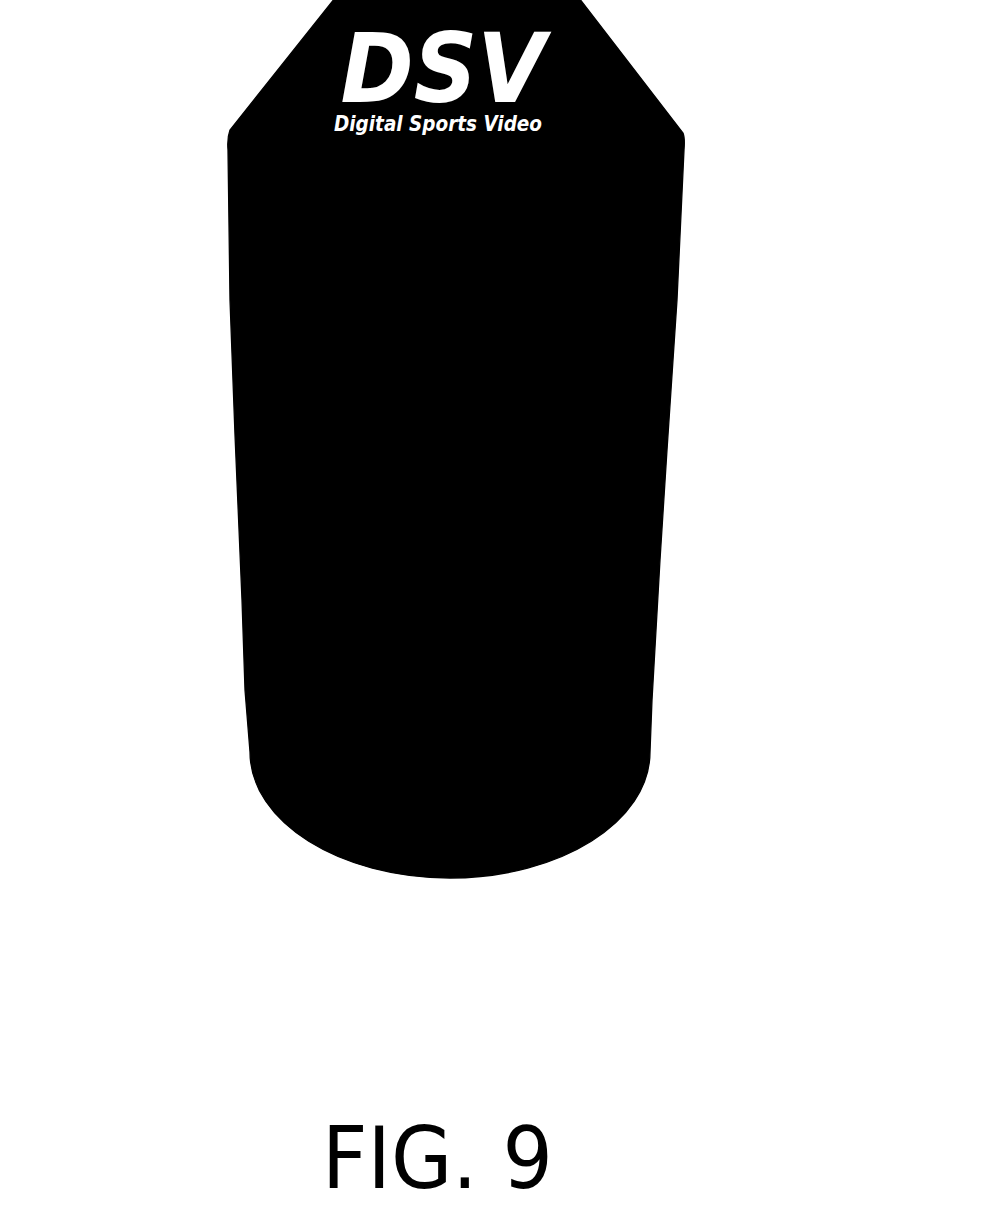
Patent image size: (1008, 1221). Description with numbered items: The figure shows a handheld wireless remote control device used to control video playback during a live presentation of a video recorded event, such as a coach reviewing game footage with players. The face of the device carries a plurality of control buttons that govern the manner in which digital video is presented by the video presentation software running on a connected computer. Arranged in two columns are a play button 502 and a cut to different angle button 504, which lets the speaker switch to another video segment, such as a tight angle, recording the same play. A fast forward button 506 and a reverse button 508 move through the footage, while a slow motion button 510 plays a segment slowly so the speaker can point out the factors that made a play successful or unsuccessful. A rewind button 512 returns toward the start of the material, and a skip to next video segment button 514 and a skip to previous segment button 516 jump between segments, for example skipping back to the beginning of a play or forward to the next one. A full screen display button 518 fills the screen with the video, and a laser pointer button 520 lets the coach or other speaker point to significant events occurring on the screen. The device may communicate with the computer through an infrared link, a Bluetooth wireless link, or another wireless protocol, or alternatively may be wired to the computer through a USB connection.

The play button 502 is at (671, 692).
The cut to different angle button 504 is at (231, 699).
The fast forward button 506 is at (676, 567).
The reverse button 508 is at (229, 567).
The slow motion button 510 is at (683, 442).
The rewind button 512 is at (221, 444).
The skip to next video segment button 514 is at (689, 319).
The skip to previous segment button 516 is at (216, 326).
The full screen display button 518 is at (698, 189).
The laser pointer button 520 is at (216, 229).